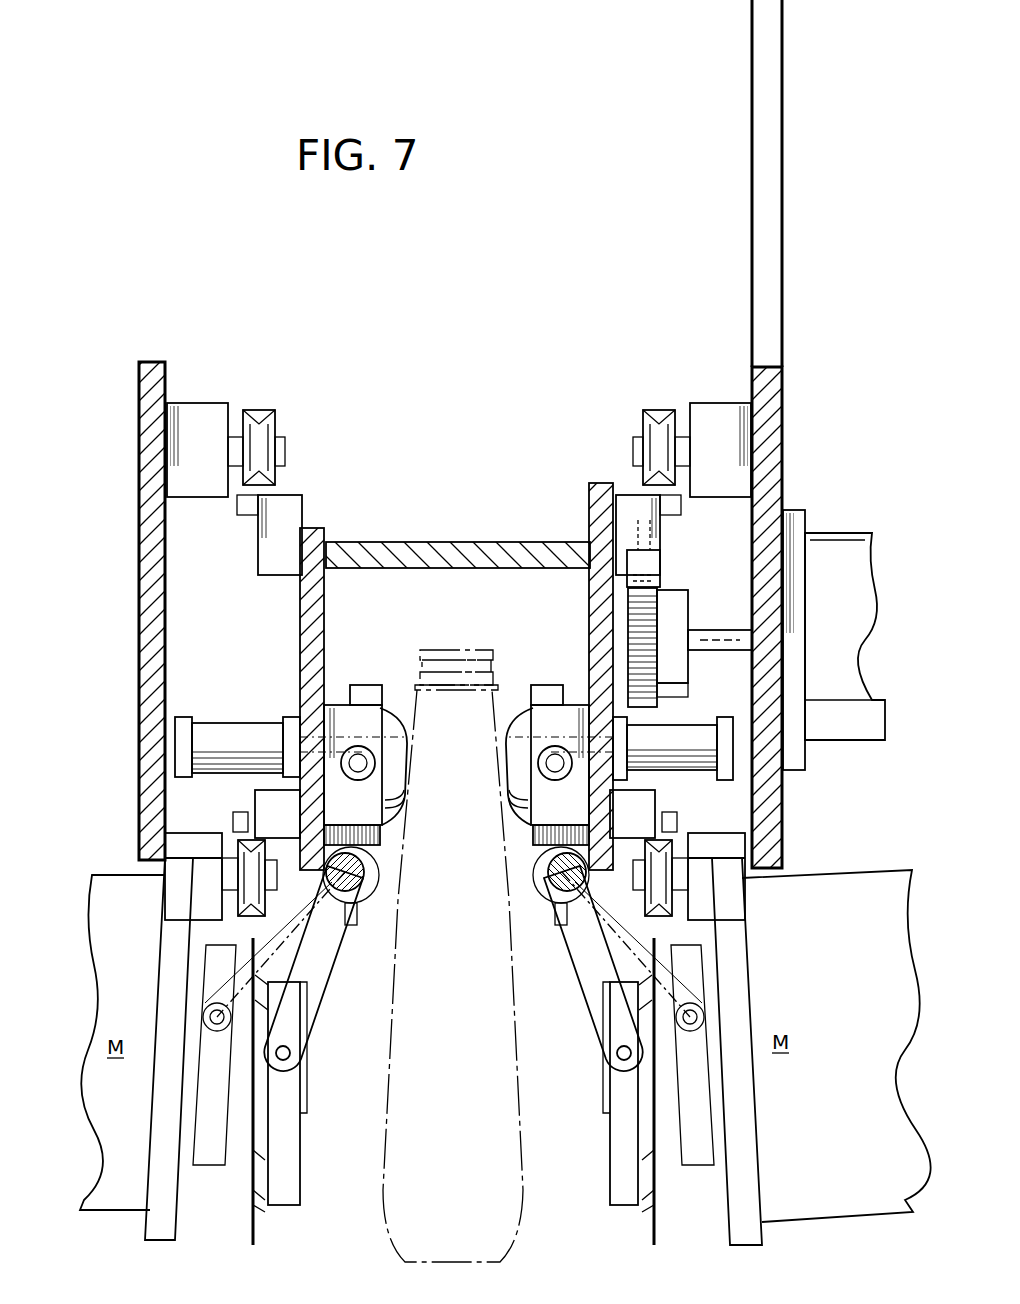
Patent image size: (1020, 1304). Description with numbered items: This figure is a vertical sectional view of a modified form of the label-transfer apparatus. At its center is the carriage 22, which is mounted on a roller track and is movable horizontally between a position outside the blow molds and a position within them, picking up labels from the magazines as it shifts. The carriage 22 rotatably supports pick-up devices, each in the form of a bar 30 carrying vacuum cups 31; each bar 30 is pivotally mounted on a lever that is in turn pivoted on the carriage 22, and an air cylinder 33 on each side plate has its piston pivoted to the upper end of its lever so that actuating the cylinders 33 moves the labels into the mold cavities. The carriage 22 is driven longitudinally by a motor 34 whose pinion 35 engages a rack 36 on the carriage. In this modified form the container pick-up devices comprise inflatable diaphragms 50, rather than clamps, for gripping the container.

The carriage 22 is at (428, 542).
The bar 30 is at (287, 1140).
The vacuum cups 31 is at (262, 1005).
The air cylinder 33 is at (237, 733).
The motor 34 is at (840, 616).
The pinion 35 is at (677, 623).
The rack 36 is at (662, 560).
The inflatable diaphragms 50 is at (390, 703).